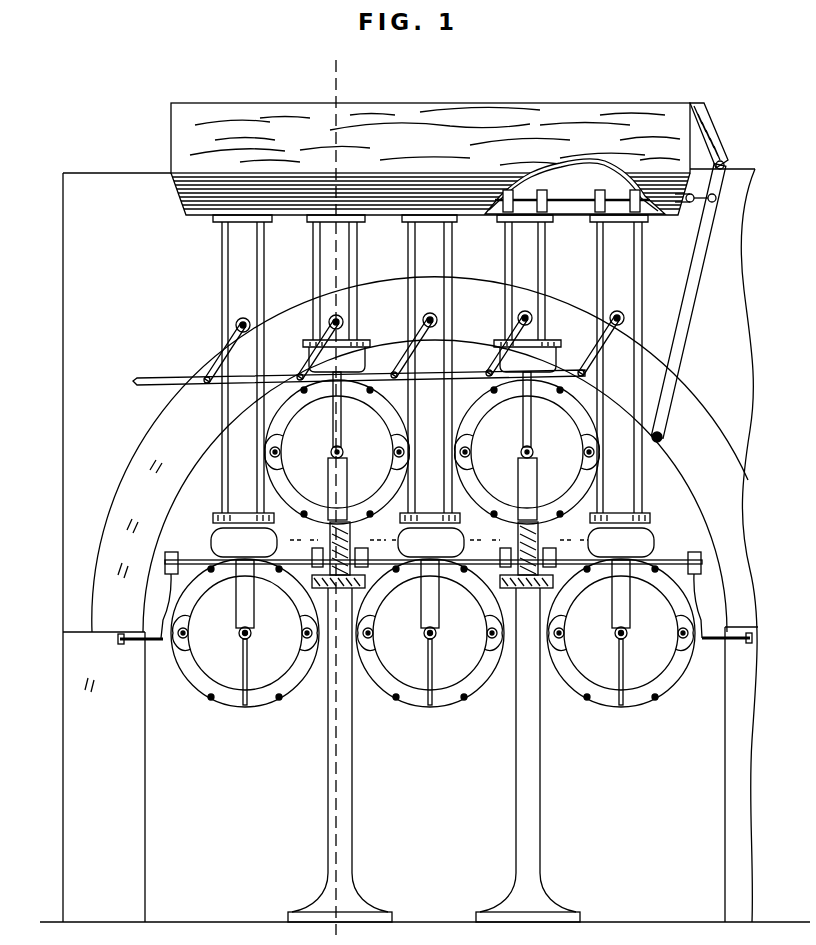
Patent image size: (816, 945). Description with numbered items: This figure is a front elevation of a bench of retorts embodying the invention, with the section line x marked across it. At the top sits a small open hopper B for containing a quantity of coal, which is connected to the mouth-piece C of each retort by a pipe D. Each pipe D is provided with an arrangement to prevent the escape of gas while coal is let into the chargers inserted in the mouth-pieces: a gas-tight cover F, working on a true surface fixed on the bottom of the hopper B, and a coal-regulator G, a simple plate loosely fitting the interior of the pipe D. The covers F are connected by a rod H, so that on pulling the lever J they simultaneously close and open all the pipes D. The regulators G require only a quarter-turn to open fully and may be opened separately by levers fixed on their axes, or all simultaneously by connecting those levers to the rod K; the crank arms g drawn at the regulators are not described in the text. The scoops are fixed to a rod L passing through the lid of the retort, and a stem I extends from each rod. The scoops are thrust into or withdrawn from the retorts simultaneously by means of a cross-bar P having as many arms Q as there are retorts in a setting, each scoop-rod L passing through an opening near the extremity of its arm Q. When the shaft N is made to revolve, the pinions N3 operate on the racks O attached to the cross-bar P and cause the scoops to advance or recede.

The hopper B is at (430, 159).
The mouth-piece C is at (433, 543).
The pipe D is at (240, 250).
The gas-tight cover F is at (520, 200).
The coal-regulator G is at (243, 317).
The crank arm g is at (225, 355).
The rod H is at (575, 186).
The stem I is at (340, 415).
The lever J is at (680, 330).
The rod K is at (180, 366).
The scoop-rod L is at (343, 455).
The shaft N is at (186, 558).
The pinion N3 is at (326, 552).
The rack O is at (345, 540).
The cross-bar P is at (432, 535).
The arm Q is at (345, 475).
The section line x is at (346, 495).